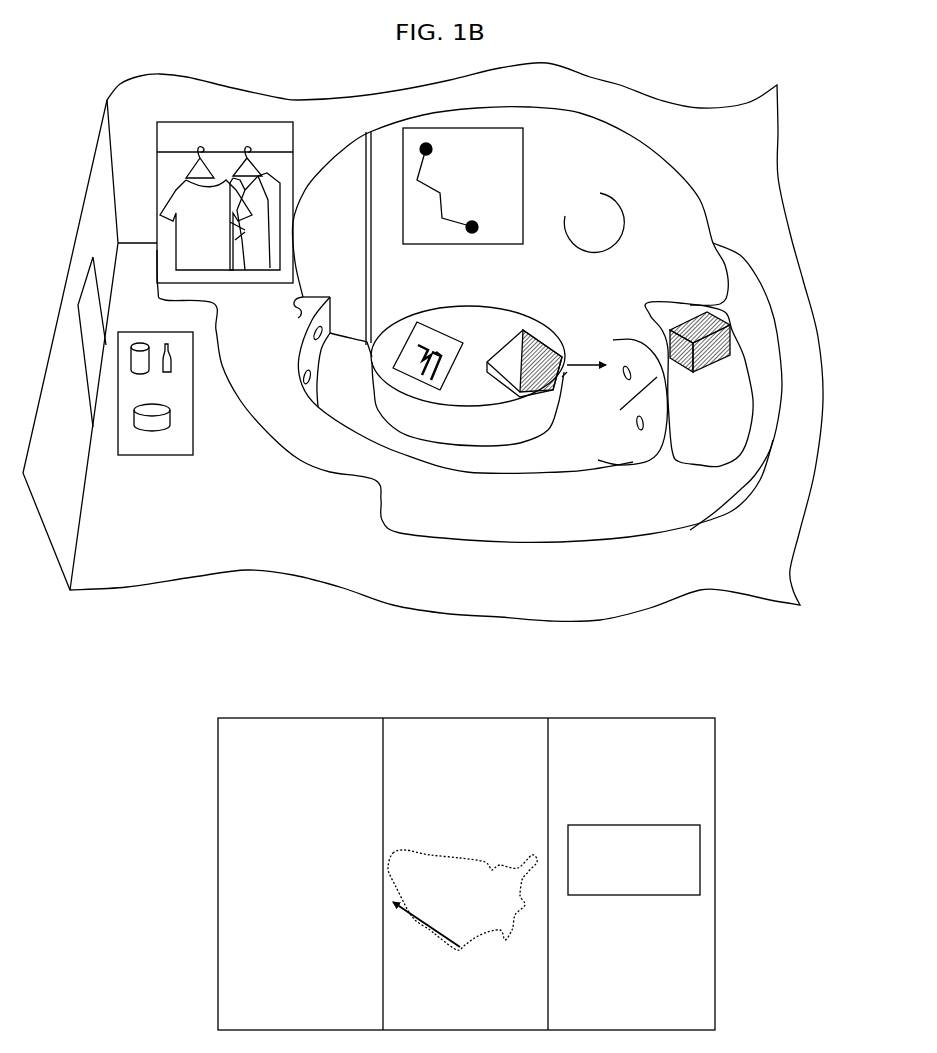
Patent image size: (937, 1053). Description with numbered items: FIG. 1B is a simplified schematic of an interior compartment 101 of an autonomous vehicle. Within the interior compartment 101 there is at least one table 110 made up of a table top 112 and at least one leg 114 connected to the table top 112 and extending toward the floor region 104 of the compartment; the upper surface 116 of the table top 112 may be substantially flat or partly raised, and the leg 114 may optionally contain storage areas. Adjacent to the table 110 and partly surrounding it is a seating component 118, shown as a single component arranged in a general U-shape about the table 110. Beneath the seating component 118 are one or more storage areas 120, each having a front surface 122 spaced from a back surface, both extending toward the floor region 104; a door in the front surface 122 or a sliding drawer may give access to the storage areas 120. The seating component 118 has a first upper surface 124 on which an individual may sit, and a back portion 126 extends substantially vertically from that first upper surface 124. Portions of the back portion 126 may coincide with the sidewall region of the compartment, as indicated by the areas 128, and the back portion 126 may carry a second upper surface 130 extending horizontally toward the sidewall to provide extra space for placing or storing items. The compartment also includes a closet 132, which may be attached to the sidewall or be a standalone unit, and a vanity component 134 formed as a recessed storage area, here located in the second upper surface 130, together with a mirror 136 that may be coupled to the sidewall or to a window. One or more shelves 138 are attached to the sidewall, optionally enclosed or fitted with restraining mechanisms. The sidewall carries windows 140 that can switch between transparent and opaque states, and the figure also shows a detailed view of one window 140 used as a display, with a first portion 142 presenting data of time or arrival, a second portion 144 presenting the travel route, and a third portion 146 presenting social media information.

The interior compartment 101 is at (683, 63).
The floor region 104 is at (482, 385).
The table 110 is at (568, 372).
The table top 112 is at (443, 356).
The leg 114 is at (468, 376).
The upper surface 116 is at (453, 318).
The seating component 118 is at (300, 295).
The storage areas 120 is at (613, 353).
The front surface 122 is at (570, 358).
The first upper surface 124 is at (517, 386).
The back portion 126 is at (258, 420).
The areas 128 is at (747, 320).
The second upper surface 130 is at (496, 491).
The closet 132 is at (283, 121).
The vanity component 134 is at (160, 457).
The mirror 136 is at (82, 378).
The shelves 138 is at (727, 393).
The window 140 is at (146, 686).
The first portion 142 is at (291, 717).
The second portion 144 is at (513, 717).
The third portion 146 is at (677, 717).